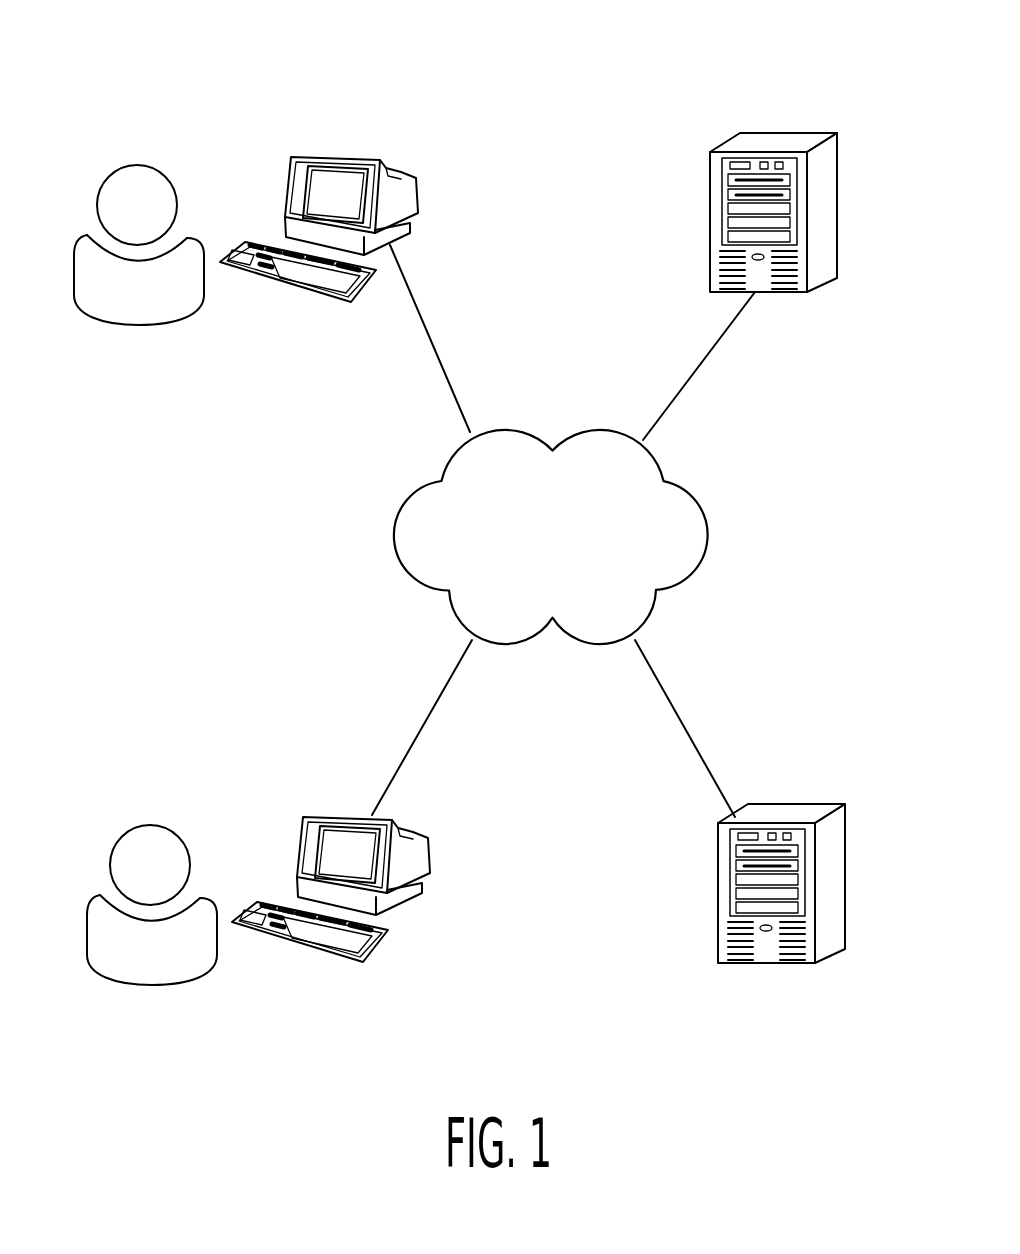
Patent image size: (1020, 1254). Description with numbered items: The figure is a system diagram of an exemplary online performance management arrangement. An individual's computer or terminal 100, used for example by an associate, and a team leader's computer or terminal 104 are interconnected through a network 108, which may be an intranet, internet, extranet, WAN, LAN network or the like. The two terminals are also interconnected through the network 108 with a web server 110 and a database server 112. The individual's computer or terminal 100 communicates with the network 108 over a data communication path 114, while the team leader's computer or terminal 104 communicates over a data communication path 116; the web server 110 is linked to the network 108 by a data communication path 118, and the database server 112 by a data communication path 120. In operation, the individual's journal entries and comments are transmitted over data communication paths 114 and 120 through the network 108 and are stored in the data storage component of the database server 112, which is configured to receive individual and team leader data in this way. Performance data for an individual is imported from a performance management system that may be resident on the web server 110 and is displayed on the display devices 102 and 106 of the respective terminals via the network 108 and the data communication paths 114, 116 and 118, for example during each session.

The individual's computer or terminal 100 is at (292, 108).
The display device 102 is at (418, 198).
The team leader's computer or terminal 104 is at (313, 782).
The display device 106 is at (430, 860).
The network 108 is at (573, 574).
The web server 110 is at (783, 133).
The database server 112 is at (822, 805).
The data communication path 114 is at (443, 367).
The data communication path 116 is at (423, 722).
The data communication path 118 is at (684, 385).
The data communication path 120 is at (680, 713).